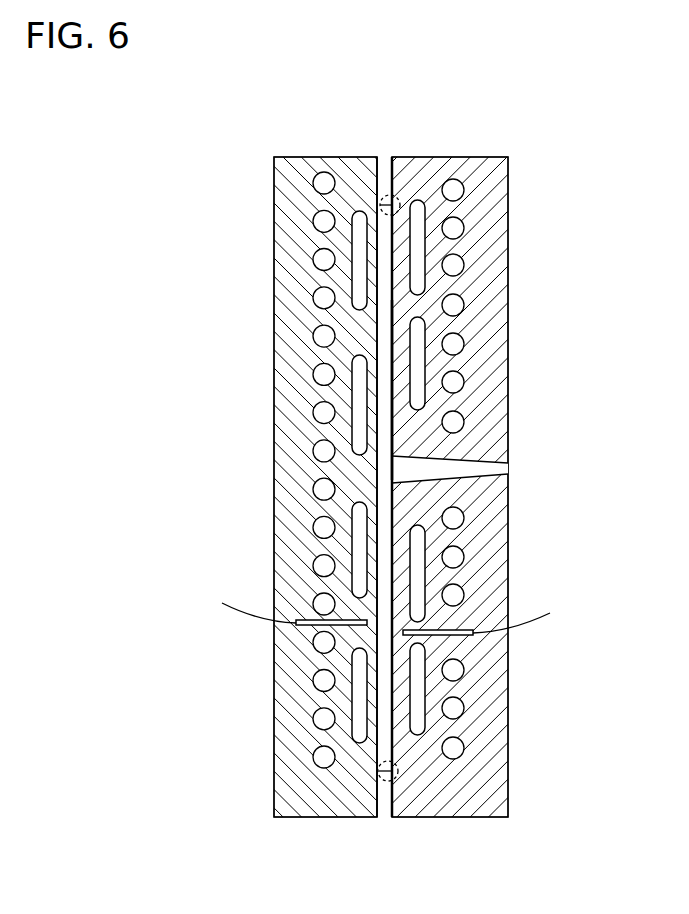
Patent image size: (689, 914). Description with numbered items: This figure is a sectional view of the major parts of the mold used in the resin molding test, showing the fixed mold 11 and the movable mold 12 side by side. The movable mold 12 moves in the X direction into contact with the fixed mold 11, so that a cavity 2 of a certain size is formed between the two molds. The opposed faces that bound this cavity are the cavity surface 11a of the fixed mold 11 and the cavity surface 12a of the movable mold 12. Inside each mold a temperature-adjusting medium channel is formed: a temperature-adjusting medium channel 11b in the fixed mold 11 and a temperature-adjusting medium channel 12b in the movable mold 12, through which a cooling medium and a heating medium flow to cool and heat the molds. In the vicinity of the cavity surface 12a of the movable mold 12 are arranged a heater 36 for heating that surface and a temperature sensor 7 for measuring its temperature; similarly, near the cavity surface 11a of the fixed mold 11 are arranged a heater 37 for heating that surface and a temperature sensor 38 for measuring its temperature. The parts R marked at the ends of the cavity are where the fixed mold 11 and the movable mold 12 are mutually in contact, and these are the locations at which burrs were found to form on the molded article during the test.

The fixed mold 11 is at (510, 154).
The movable mold 12 is at (272, 154).
The cavity surface 11a is at (390, 242).
The cavity surface 12a is at (379, 236).
The temperature-adjusting medium channel 11b is at (455, 179).
The temperature-adjusting medium channel 12b is at (318, 176).
The cavity 2 is at (396, 301).
The heater 36 is at (352, 389).
The heater 37 is at (423, 252).
The temperature sensor 38 is at (463, 638).
The temperature sensor 7 is at (304, 628).
The parts R is at (387, 196).